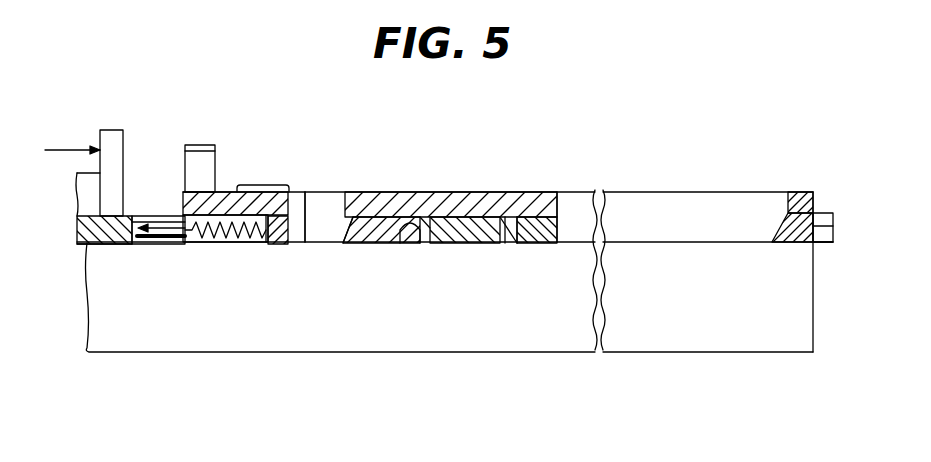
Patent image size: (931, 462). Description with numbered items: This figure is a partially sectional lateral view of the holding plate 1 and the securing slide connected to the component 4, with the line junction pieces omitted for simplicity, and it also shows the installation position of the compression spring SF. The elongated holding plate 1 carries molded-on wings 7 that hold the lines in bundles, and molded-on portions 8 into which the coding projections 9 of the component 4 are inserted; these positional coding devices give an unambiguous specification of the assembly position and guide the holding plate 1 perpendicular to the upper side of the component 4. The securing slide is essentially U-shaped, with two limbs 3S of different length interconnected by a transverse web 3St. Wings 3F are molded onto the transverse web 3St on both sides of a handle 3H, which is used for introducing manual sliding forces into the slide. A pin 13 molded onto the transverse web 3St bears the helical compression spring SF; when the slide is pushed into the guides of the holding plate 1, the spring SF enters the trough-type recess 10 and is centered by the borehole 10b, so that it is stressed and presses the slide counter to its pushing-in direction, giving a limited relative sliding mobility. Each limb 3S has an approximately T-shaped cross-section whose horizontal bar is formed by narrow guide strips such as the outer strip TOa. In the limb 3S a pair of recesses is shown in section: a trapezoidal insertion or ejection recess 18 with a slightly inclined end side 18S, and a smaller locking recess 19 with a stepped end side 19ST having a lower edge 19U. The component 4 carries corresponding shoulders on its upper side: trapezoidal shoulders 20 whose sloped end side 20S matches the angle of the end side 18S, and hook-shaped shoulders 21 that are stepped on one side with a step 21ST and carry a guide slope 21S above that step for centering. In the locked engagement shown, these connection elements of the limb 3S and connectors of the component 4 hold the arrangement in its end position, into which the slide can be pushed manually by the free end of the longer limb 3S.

The holding plate 1 is at (557, 191).
The handle 3H is at (117, 140).
The wings 3F is at (77, 195).
The transverse web 3St is at (90, 245).
The limbs 3S is at (826, 243).
The component 4 is at (623, 340).
The wings 7 is at (197, 145).
The portions 8 is at (304, 191).
The coding projections 9 is at (270, 190).
The trough-type recess 10 is at (210, 243).
The borehole 10b is at (262, 244).
The helical compression spring SF is at (232, 244).
The pin 13 is at (132, 243).
The locking recess 19 is at (383, 200).
The guide slope 21S is at (427, 217).
The insertion or ejection recess 18 is at (495, 216).
The hook-shaped shoulders 21 is at (380, 244).
The step 21ST is at (402, 244).
The lower edge 19U is at (428, 244).
The stepped end side 19ST is at (455, 244).
The inclined end side 18S is at (470, 244).
The trapezoidal shoulders 20 is at (505, 244).
The end side 20S is at (513, 244).
The guide strip TOa is at (815, 212).